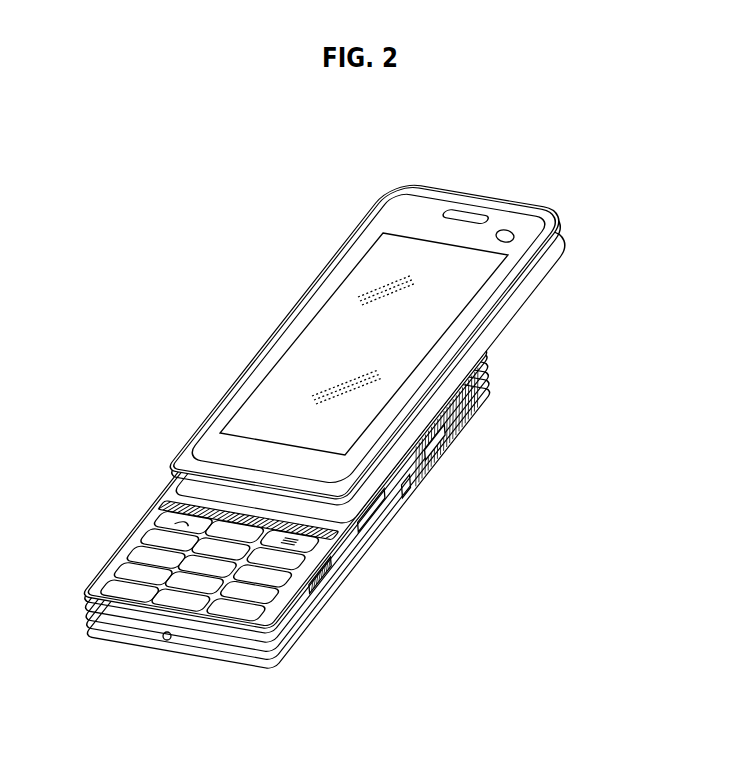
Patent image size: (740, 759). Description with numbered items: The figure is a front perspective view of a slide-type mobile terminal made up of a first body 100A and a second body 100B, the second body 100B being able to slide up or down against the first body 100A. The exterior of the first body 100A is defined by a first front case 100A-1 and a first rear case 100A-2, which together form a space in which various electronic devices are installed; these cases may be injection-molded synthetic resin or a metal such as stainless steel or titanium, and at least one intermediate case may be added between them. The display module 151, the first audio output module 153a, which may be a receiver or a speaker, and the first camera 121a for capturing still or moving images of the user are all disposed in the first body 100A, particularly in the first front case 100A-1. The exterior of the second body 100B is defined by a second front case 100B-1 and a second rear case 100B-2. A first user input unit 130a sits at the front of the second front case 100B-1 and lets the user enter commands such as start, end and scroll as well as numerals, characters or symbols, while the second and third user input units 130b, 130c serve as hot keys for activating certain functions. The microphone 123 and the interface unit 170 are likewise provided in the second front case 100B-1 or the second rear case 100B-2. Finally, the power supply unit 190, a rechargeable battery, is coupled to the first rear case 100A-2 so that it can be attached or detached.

The first body 100A is at (433, 321).
The second body 100B is at (324, 519).
The first front case 100A-1 is at (523, 249).
The first rear case 100A-2 is at (570, 229).
The second front case 100B-1 is at (490, 362).
The second rear case 100B-2 is at (481, 391).
The first camera 121a is at (511, 232).
The microphone 123 is at (168, 641).
The first user input unit 130a is at (117, 543).
The second user input unit 130b is at (373, 522).
The third user input unit 130c is at (331, 572).
The display module 151 is at (365, 281).
The first audio output module 153a is at (464, 212).
The interface unit 170 is at (440, 443).
The power supply unit 190 is at (405, 493).